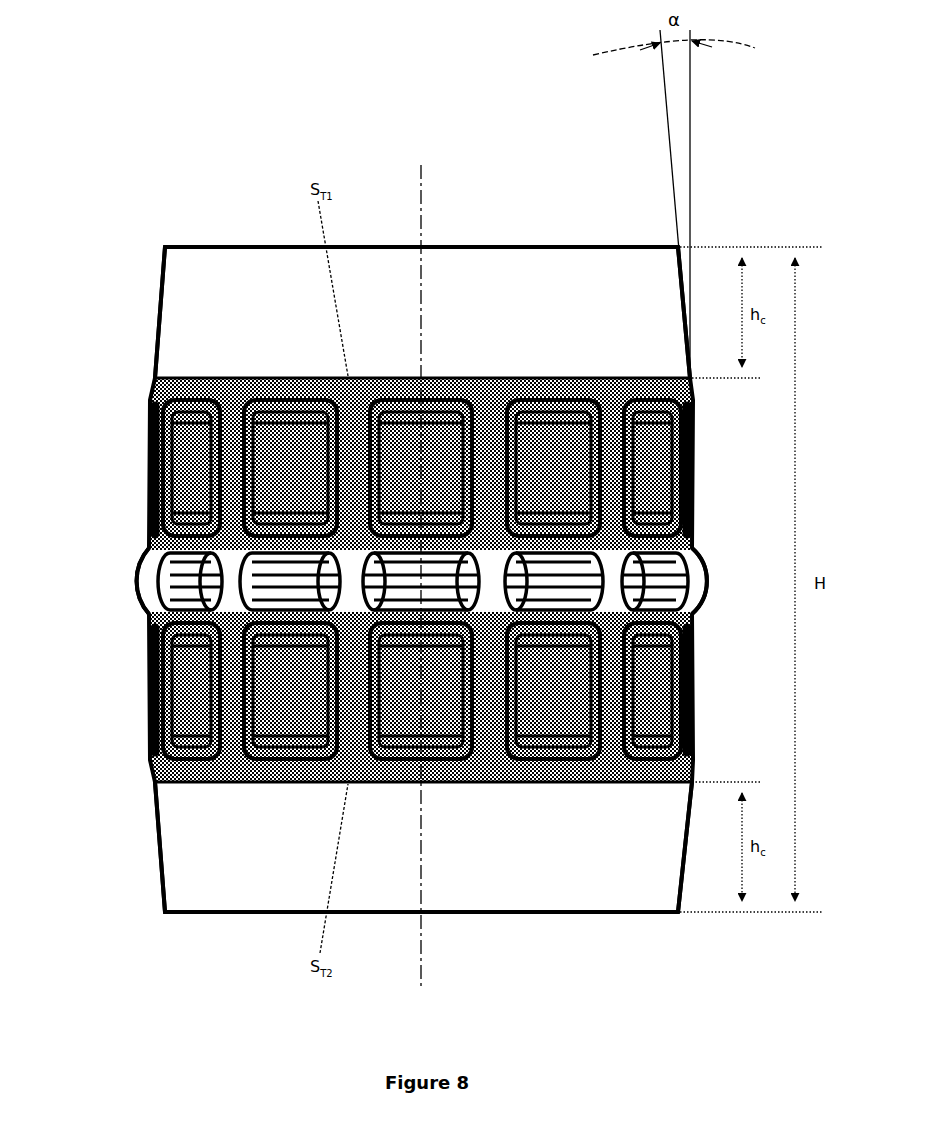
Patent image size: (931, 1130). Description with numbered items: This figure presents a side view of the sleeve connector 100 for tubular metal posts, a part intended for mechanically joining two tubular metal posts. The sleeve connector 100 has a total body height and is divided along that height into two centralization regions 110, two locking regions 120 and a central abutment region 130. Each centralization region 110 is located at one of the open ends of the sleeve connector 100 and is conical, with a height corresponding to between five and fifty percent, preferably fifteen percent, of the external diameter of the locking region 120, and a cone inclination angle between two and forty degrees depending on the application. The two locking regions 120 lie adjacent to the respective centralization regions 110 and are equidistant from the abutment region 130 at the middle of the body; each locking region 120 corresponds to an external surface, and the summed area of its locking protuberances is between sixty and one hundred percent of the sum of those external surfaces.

The sleeve connector 100 is at (108, 153).
The centralization region 110 is at (183, 275).
The locking region 120 is at (128, 470).
The abutment region 130 is at (128, 581).